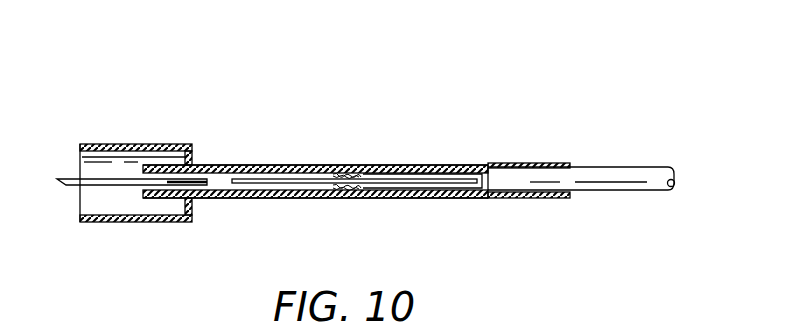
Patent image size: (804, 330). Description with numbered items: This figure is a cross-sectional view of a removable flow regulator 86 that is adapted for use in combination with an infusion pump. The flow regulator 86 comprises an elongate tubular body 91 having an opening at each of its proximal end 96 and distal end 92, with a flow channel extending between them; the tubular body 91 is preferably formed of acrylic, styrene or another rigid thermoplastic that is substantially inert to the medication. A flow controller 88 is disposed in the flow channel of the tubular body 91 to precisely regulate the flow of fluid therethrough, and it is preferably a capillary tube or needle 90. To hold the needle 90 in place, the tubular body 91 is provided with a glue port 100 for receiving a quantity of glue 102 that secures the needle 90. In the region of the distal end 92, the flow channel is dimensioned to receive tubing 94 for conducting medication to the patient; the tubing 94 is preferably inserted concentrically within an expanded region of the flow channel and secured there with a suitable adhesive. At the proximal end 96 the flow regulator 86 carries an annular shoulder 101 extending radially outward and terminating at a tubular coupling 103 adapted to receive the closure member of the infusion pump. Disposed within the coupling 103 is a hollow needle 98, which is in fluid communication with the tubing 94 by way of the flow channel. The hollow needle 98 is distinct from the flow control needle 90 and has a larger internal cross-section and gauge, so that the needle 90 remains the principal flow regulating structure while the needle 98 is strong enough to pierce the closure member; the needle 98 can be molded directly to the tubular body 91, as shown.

The flow regulator 86 is at (313, 118).
The flow controller 88 is at (287, 172).
The needle 90 is at (458, 190).
The tubular body 91 is at (417, 165).
The distal end 92 is at (560, 198).
The tubing 94 is at (635, 170).
The proximal end 96 is at (193, 156).
The hollow needle 98 is at (92, 180).
The glue port 100 is at (346, 198).
The annular shoulder 101 is at (192, 212).
The glue 102 is at (346, 172).
The tubular coupling 103 is at (101, 222).